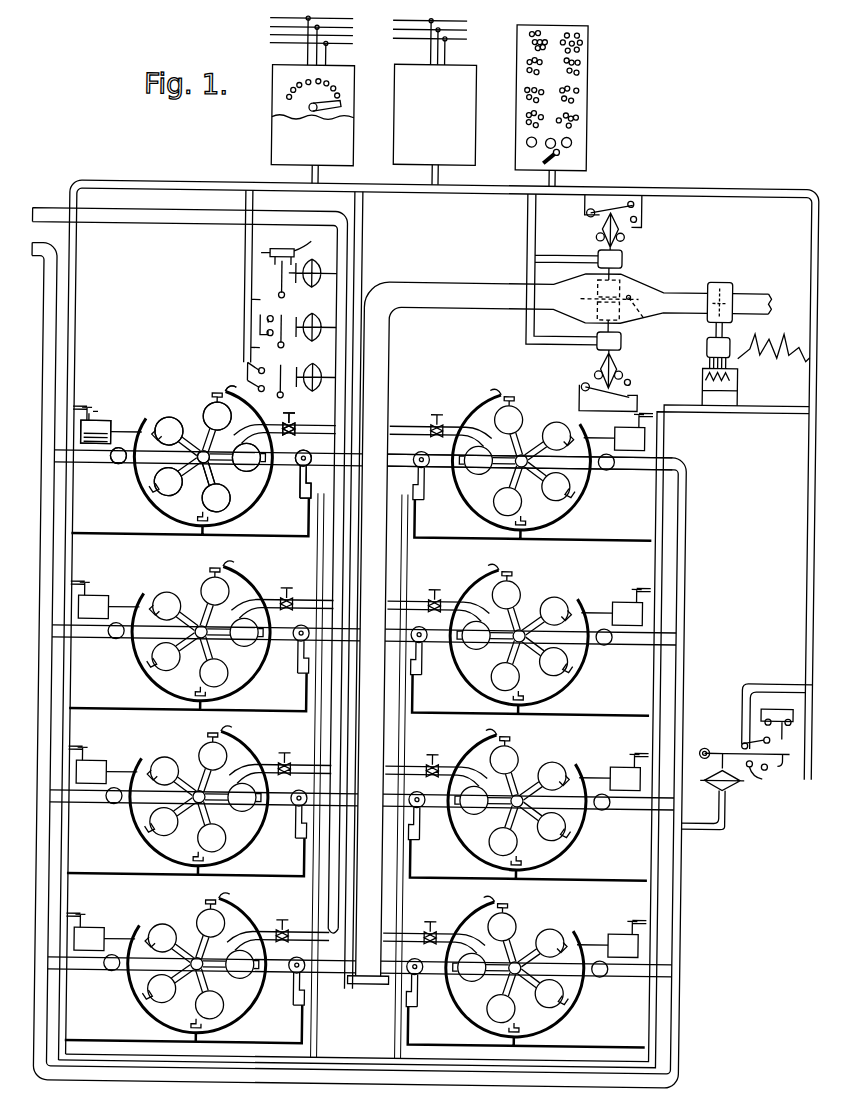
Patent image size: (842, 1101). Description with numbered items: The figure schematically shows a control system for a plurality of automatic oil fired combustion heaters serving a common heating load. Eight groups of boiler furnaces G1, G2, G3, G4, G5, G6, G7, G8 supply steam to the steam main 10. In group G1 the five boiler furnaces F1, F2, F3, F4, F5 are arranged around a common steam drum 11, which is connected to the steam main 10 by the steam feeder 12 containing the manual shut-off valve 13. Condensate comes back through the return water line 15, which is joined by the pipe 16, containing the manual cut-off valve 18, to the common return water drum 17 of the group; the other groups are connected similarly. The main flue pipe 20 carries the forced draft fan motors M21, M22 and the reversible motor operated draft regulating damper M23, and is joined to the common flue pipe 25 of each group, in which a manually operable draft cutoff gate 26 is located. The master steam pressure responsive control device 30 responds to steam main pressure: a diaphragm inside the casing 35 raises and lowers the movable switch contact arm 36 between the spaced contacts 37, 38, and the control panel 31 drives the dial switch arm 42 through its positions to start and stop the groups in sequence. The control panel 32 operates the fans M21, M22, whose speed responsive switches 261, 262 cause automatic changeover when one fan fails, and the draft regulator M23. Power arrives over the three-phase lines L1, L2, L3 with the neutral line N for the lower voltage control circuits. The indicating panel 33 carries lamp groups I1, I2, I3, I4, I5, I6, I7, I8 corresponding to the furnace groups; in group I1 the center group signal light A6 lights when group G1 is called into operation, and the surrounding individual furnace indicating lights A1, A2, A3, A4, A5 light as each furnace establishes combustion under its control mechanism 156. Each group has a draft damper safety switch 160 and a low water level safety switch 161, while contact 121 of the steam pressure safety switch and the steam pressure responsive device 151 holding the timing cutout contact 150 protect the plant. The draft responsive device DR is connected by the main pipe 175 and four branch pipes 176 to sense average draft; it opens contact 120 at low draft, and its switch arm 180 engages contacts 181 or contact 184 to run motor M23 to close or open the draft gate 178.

The steam main 10 is at (356, 238).
The common steam drum 11 is at (196, 443).
The steam feeder 12 is at (338, 428).
The manual shut-off valve 13 is at (275, 419).
The return water line 15 is at (50, 318).
The pipe 16 is at (97, 463).
The common return water drum 17 is at (195, 487).
The manual cut-off valve 18 is at (115, 470).
The main flue pipe 20 is at (449, 280).
The common flue pipe 25 is at (291, 452).
The manually operable draft cutoff gate 26 is at (314, 450).
The master steam pressure responsive control device 30 is at (292, 280).
The control panel 31 is at (271, 107).
The control panel 32 is at (393, 129).
The indicating panel 33 is at (553, 101).
The casing 35 is at (316, 268).
The movable switch contact arm 36 is at (281, 275).
The contact 37 is at (300, 248).
The contact 38 is at (270, 252).
The dial switch arm 42 is at (341, 100).
The contact 120 is at (762, 699).
The contact 121 is at (272, 320).
The timing cutout contact 150 is at (250, 372).
The steam pressure responsive device 151 is at (312, 366).
The control mechanism 156 is at (211, 395).
The draft damper safety switch 160 is at (300, 495).
The low water level safety switch 161 is at (97, 415).
The main pipe 175 is at (721, 821).
The branch pipes 176 is at (322, 550).
The draft gate 178 is at (732, 280).
The switch arm 180 is at (787, 752).
The contacts 181 is at (773, 761).
The contact 184 is at (750, 736).
The speed responsive switch 261 is at (598, 228).
The speed responsive switch 262 is at (600, 362).
The group of boiler furnaces G1 is at (203, 460).
The group of boiler furnaces G2 is at (520, 464).
The group of boiler furnaces G3 is at (201, 634).
The group of boiler furnaces G4 is at (518, 639).
The group of boiler furnaces G5 is at (199, 800).
The group of boiler furnaces G6 is at (516, 803).
The group of boiler furnaces G7 is at (197, 967).
The group of boiler furnaces G8 is at (514, 970).
The boiler furnace F1 is at (217, 416).
The boiler furnace F2 is at (246, 457).
The boiler furnace F3 is at (216, 498).
The boiler furnace F4 is at (168, 481).
The boiler furnace F5 is at (169, 431).
The forced draft fan motor M21 is at (625, 282).
The forced draft fan motor M22 is at (625, 312).
The reversible electric motor operated draft regulating damper M23 is at (734, 336).
The draft responsive device DR is at (744, 777).
The three-phase line L1 is at (266, 19).
The three-phase line L2 is at (266, 27).
The three-phase line L3 is at (268, 35).
The neutral line N is at (281, 42).
The individual furnace indicating light A1 is at (539, 29).
The individual furnace indicating light A2 is at (540, 37).
The individual furnace indicating light A3 is at (543, 44).
The individual furnace indicating light A4 is at (530, 36).
The individual furnace indicating light A5 is at (528, 27).
The group signal light A6 is at (534, 43).
The group of indicating electric lamps I1 is at (518, 37).
The group of indicating electric lamps I2 is at (524, 70).
The group of indicating electric lamps I3 is at (526, 97).
The group of indicating electric lamps I4 is at (526, 120).
The group of indicating electric lamps I5 is at (580, 34).
The group of indicating electric lamps I6 is at (579, 59).
The group of indicating electric lamps I7 is at (578, 86).
The group of indicating electric lamps I8 is at (578, 113).